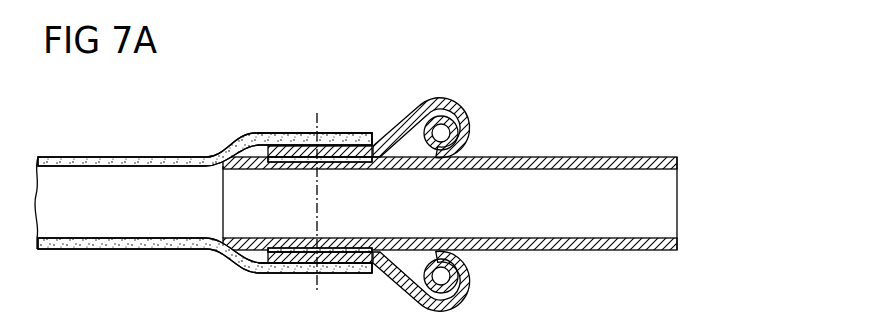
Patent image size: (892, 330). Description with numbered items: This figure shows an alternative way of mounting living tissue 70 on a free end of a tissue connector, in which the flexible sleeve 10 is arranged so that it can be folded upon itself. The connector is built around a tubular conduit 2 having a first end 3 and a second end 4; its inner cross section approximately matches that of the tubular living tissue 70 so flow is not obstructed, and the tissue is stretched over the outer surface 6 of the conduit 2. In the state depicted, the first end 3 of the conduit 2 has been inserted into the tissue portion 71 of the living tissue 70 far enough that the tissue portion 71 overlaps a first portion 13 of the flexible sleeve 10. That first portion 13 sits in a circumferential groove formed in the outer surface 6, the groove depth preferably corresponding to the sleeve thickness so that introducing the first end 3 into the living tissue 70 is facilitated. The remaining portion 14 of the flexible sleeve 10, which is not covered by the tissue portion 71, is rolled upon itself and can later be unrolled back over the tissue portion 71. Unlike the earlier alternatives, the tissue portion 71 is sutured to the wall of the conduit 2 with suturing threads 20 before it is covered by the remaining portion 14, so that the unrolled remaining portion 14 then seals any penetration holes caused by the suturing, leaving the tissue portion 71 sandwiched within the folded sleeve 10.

The conduit 2 is at (602, 218).
The first end 3 is at (235, 200).
The second end 4 is at (663, 201).
The outer surface 6 is at (584, 157).
The flexible sleeve 10 is at (482, 64).
The first portion 13 is at (331, 145).
The remaining portion 14 is at (471, 118).
The suturing threads 20 is at (317, 288).
The living tissue 70 is at (167, 157).
The tissue portion 71 is at (293, 133).